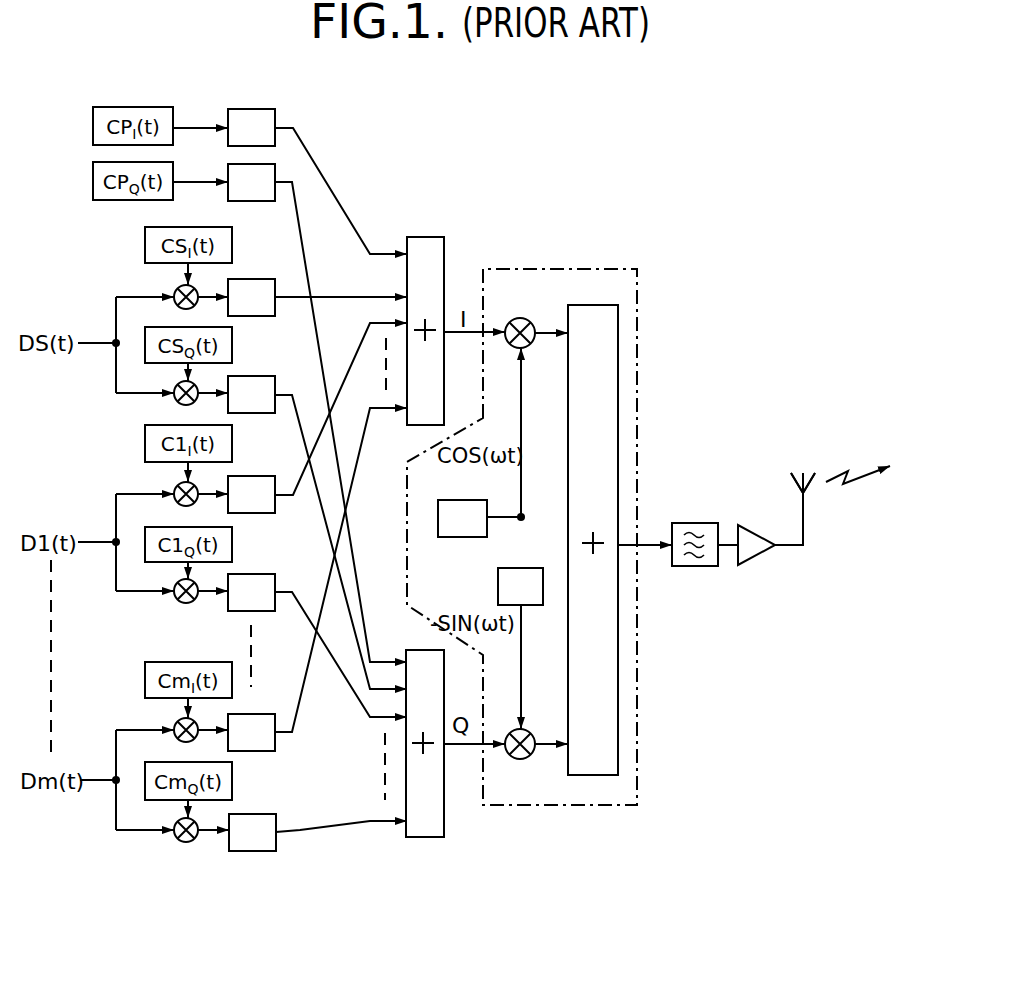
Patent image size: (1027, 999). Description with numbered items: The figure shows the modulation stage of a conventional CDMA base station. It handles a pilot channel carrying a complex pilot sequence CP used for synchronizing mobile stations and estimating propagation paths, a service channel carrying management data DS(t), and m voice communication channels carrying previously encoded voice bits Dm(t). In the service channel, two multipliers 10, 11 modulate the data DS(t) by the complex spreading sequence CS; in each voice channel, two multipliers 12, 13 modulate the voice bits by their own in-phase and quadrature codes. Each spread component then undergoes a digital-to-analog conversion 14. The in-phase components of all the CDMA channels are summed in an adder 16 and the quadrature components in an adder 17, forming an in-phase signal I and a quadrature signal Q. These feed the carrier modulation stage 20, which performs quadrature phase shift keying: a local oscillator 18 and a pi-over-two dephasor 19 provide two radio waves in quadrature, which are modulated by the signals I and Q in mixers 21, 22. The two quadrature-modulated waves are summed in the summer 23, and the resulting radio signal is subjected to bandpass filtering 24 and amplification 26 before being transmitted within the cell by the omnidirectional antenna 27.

The multiplier 10 is at (176, 292).
The multiplier 11 is at (176, 398).
The multiplier 12 is at (176, 490).
The multiplier 13 is at (175, 596).
The digital-to-analog conversion 14 is at (275, 117).
The adder 16 is at (445, 245).
The adder 17 is at (445, 827).
The local oscillator 18 is at (452, 537).
The π/2 dephasor 19 is at (498, 588).
The carrier modulation stage 20 is at (638, 308).
The mixer 21 is at (523, 320).
The mixer 22 is at (523, 757).
The summer 23 is at (620, 420).
The bandpass filtering 24 is at (697, 567).
The amplification 26 is at (758, 555).
The omnidirectional antenna 27 is at (805, 498).